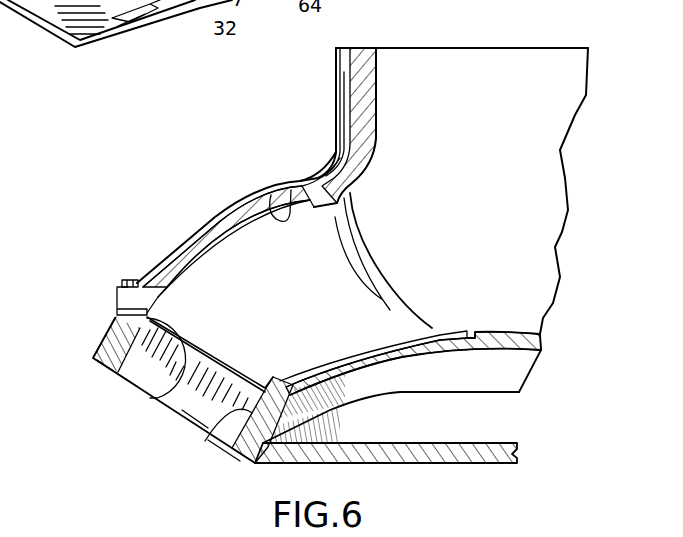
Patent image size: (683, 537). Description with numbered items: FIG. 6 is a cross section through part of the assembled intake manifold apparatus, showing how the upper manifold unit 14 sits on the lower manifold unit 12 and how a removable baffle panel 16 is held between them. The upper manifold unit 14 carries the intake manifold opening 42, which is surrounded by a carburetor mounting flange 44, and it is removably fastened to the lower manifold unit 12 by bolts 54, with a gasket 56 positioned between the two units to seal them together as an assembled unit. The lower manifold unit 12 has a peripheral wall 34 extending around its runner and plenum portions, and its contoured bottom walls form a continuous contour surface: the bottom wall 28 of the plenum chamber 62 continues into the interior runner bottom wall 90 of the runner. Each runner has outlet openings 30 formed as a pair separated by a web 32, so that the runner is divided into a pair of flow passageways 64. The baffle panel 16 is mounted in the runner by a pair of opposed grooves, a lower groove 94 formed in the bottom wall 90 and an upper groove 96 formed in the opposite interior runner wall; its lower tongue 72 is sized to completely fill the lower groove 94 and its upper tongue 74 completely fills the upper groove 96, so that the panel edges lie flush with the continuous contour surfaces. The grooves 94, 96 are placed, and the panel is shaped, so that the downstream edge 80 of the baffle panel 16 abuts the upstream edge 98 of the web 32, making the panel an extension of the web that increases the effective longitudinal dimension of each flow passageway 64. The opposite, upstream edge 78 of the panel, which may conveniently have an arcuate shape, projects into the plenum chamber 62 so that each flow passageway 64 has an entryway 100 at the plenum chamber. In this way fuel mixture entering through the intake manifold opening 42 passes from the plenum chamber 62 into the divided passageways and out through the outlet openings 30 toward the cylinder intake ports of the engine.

The lower manifold unit 12 is at (95, 332).
The upper manifold unit 14 is at (168, 194).
The baffle panel 16 is at (288, 310).
The bottom wall of lower plenum portion 28 is at (505, 337).
The outlet openings 30 is at (133, 373).
The web 32 is at (182, 410).
The peripheral wall 34 is at (92, 354).
The intake manifold opening 42 is at (472, 80).
The carburetor mounting flange 44 is at (362, 48).
The bolts 54 is at (133, 278).
The gasket 56 is at (117, 309).
The plenum chamber 62 is at (478, 157).
The flow passageways 64 is at (213, 393).
The lower tongue 72 is at (372, 368).
The upper tongue 74 is at (225, 248).
The upstream edge of baffle panel 78 is at (373, 260).
The downstream edge of baffle panel 80 is at (157, 398).
The interior runner bottom wall 90 is at (208, 440).
The lower groove 94 is at (387, 345).
The upper groove 96 is at (291, 190).
The upstream edge of web 98 is at (232, 362).
The entryway 100 is at (348, 233).